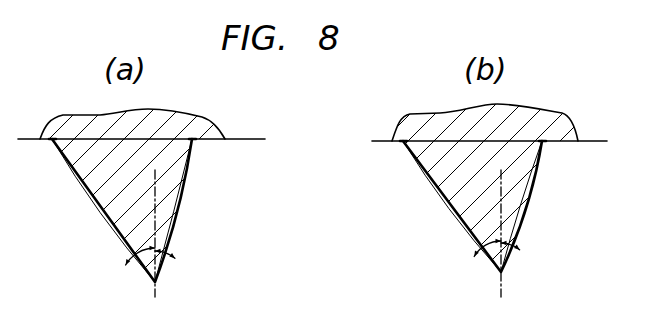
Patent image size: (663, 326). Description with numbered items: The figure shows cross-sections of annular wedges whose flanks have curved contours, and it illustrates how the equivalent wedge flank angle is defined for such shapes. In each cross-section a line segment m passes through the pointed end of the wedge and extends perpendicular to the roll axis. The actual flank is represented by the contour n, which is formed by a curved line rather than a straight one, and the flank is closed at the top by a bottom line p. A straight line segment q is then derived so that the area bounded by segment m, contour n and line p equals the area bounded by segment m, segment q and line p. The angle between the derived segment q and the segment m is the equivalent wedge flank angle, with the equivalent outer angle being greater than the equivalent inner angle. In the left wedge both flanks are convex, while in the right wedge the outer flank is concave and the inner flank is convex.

The bottom line of the wedge flank p is at (167, 139).
The line segment q is at (65, 153).
The line segment m is at (156, 184).
The contour of the wedge flank n is at (113, 233).